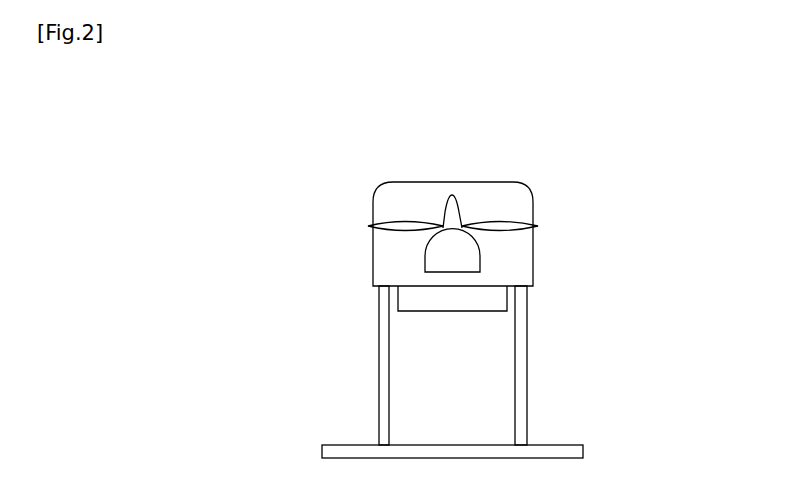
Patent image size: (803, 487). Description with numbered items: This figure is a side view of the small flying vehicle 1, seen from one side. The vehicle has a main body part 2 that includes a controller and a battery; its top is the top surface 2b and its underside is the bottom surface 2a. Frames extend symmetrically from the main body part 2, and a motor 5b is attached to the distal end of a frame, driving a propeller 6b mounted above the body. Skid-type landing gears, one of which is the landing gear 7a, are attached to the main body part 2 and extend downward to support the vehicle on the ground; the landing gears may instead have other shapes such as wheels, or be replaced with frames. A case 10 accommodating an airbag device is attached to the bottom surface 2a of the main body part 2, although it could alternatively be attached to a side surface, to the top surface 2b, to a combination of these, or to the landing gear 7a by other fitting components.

The small flying vehicle 1 is at (505, 172).
The main body part 2 is at (392, 207).
The bottom surface 2a is at (397, 287).
The top surface 2b is at (418, 182).
The motor 5b is at (470, 252).
The propeller 6b is at (512, 226).
The landing gear 7a is at (527, 382).
The case 10 is at (460, 315).